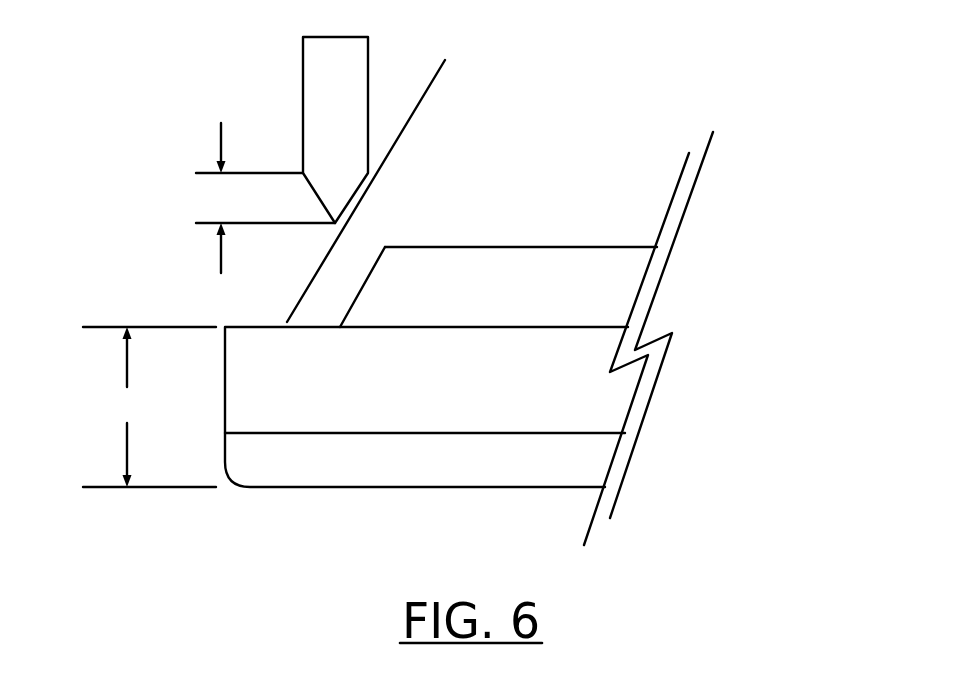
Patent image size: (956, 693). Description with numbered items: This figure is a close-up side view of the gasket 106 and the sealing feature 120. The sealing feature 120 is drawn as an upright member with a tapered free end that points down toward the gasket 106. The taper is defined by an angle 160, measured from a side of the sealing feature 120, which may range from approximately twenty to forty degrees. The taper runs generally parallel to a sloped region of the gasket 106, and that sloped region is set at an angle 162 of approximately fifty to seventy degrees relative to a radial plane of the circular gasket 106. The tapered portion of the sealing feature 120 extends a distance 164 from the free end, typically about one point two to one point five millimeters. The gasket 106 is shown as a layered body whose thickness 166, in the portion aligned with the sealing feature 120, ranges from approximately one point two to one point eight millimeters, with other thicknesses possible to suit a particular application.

The gasket 106 is at (300, 472).
The sealing feature 120 is at (302, 50).
The angle of the taper 160 is at (430, 80).
The angle of the sloped region 162 is at (374, 271).
The distance of the tapered portion 164 is at (241, 209).
The thickness of the gasket 166 is at (149, 417).